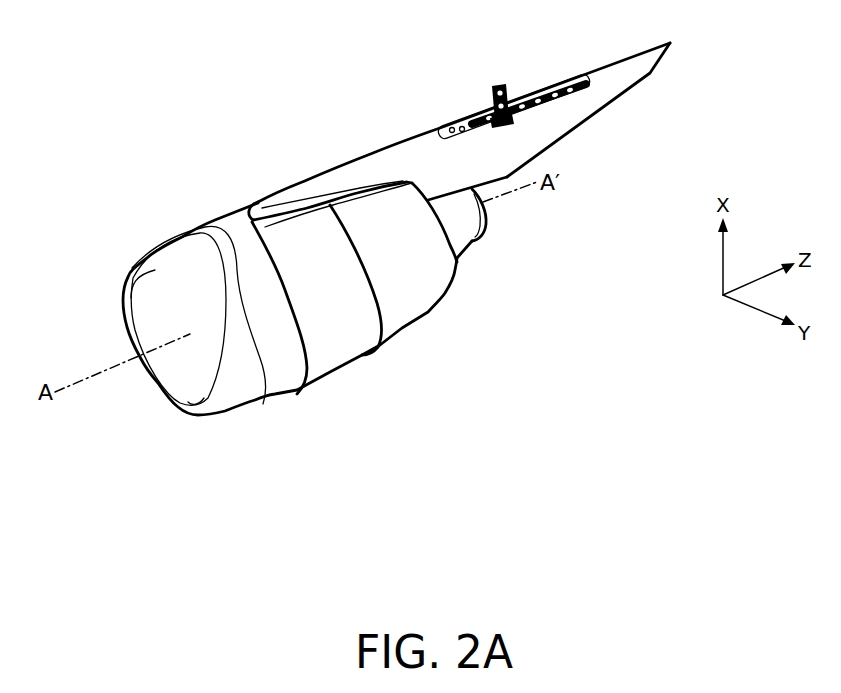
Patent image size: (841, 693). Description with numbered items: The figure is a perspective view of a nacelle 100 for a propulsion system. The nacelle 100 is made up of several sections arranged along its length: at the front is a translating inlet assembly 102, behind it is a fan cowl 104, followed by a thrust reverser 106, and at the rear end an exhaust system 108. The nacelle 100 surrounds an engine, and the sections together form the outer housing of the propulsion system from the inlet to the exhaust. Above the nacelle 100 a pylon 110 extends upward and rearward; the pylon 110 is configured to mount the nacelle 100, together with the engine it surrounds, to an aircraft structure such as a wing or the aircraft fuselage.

The nacelle 100 is at (351, 254).
The translating inlet assembly 102 is at (266, 390).
The fan cowl 104 is at (348, 337).
The thrust reverser 106 is at (415, 300).
The exhaust system 108 is at (467, 237).
The pylon 110 is at (550, 127).